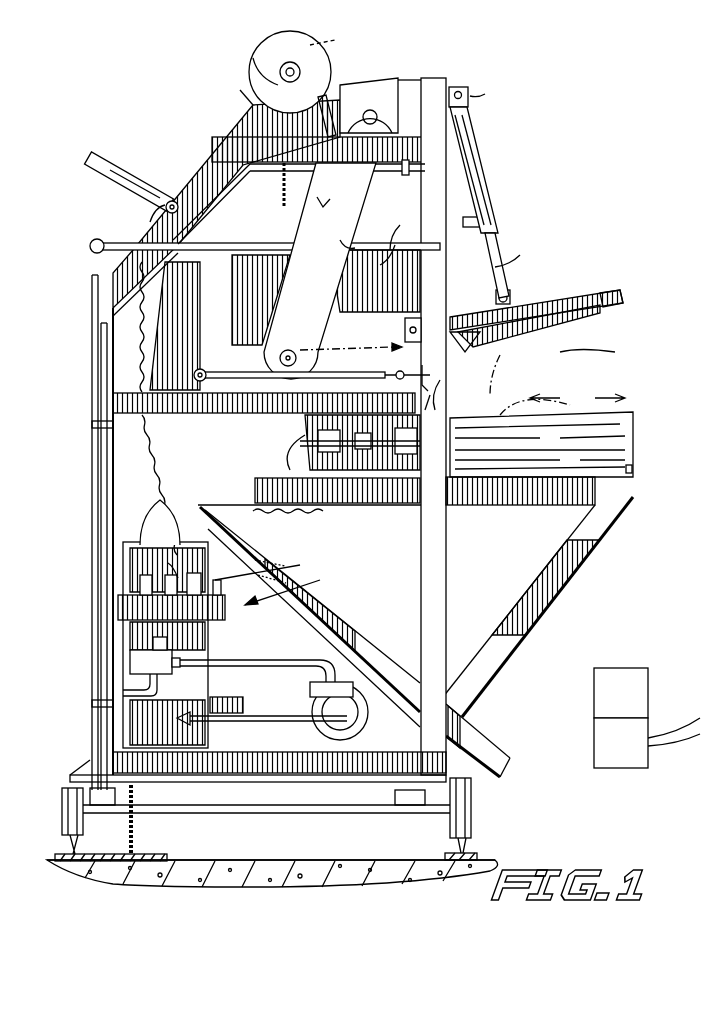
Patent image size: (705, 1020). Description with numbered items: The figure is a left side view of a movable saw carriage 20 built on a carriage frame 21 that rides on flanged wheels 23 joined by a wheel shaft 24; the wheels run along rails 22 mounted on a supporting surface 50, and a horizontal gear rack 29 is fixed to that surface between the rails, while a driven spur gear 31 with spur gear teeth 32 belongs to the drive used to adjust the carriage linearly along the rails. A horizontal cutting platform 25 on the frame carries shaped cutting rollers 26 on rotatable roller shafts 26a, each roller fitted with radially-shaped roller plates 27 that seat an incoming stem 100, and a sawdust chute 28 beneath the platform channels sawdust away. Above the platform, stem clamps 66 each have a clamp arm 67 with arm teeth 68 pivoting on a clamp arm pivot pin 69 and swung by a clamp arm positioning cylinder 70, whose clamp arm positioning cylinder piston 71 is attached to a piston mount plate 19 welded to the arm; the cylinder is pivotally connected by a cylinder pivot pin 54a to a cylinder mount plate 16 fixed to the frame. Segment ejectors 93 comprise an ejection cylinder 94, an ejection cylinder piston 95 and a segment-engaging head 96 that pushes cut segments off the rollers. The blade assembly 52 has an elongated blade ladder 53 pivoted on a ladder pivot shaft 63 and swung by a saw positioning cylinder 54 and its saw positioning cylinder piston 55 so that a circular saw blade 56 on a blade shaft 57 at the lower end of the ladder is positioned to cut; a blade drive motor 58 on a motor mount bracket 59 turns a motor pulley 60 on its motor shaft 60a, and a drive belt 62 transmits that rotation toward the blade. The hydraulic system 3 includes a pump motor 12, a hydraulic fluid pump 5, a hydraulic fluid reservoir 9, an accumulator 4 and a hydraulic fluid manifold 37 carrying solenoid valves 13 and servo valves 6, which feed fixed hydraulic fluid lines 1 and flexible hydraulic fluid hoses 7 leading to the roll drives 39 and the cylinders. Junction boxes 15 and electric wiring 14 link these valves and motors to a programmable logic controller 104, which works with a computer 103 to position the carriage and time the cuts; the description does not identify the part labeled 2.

The fixed hydraulic fluid lines 1 is at (95, 244).
The base frame member 2 is at (195, 750).
The hydraulic system 3 is at (289, 585).
The accumulator 4 is at (160, 512).
The hydraulic fluid pump 5 is at (355, 710).
The servo valves 6 is at (138, 590).
The flexible hydraulic fluid hoses 7 is at (463, 222).
The hydraulic fluid reservoir 9 is at (264, 564).
The pump motor 12 is at (367, 690).
The solenoid valve 13 is at (218, 563).
The electric wiring 14 is at (281, 662).
The junction boxes 15 is at (120, 622).
The cylinder mount plate 16 is at (150, 220).
The piston mount plate 19 is at (308, 234).
The moveable saw carriage 20 is at (528, 178).
The carriage frame 21 is at (212, 150).
The rails 22 is at (58, 856).
The flanged wheels 23 is at (62, 835).
The wheel shaft 24 is at (367, 816).
The horizontal cutting platform 25 is at (467, 504).
The shaped cutting rollers 26 is at (630, 420).
The rotatable roller shaft 26a is at (302, 511).
The radially-shaped roller plates 27 is at (582, 414).
The sawdust chute 28 is at (340, 626).
The horizontal gear rack 29 is at (153, 858).
The driven spur gear 31 is at (122, 842).
The spur gear teeth 32 is at (134, 826).
The hydraulic fluid manifold 37 is at (195, 568).
The roll drive 39 is at (320, 437).
The supporting surface 50 is at (277, 860).
The blade assembly 52 is at (400, 117).
The blade ladder 53 is at (273, 303).
The saw positioning cylinder 54 is at (132, 169).
The cylinder pivot pin 54a is at (170, 204).
The saw positioning cylinder piston 55 is at (232, 272).
The circular saw blade 56 is at (230, 446).
The blade shaft 57 is at (278, 355).
The blade drive motor 58 is at (252, 53).
The motor mount bracket 59 is at (241, 104).
The motor pulley 60 is at (250, 80).
The motor shaft 60a is at (345, 40).
The drive belt 62 is at (280, 178).
The ladder pivot shaft 63 is at (363, 101).
The stem clamps 66 is at (582, 290).
The clamp arm 67 is at (622, 305).
The arm teeth 68 is at (550, 335).
The clamp arm pivot pin 69 is at (405, 330).
The clamp arm positioning cylinder 70 is at (485, 177).
The clamp arm positioning cylinder piston 71 is at (527, 247).
The segment ejectors 93 is at (190, 376).
The ejection cylinder 94 is at (345, 384).
The ejection cylinder piston 95 is at (459, 387).
The segment-engaging head 96 is at (440, 392).
The stems 100 is at (613, 355).
The computer 103 is at (640, 709).
The programmable logic controller 104 is at (640, 760).